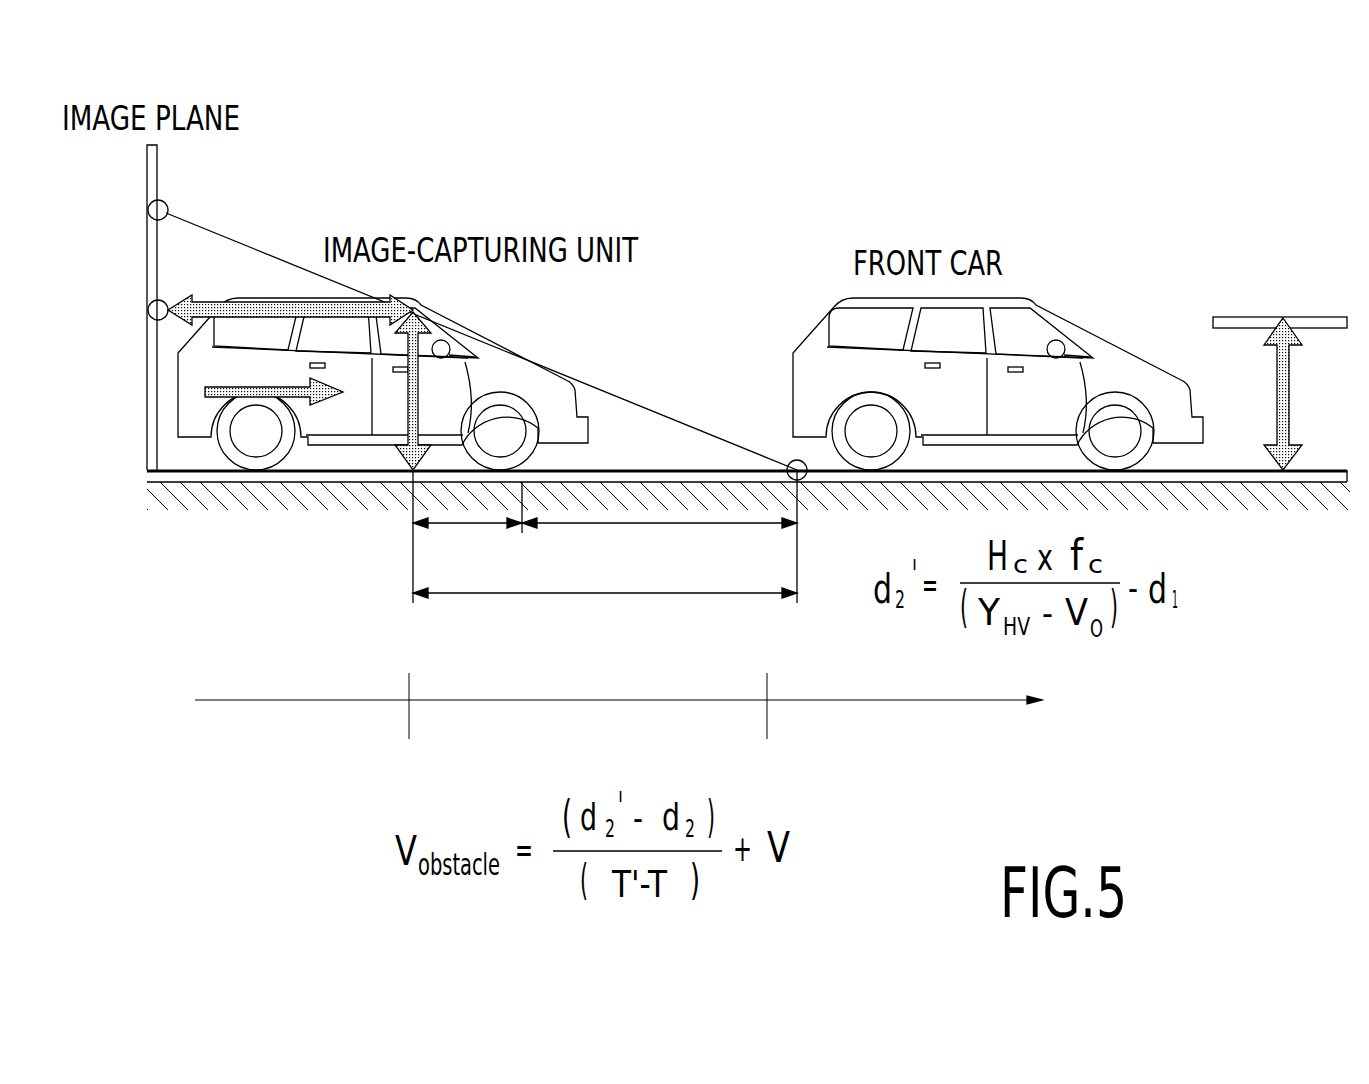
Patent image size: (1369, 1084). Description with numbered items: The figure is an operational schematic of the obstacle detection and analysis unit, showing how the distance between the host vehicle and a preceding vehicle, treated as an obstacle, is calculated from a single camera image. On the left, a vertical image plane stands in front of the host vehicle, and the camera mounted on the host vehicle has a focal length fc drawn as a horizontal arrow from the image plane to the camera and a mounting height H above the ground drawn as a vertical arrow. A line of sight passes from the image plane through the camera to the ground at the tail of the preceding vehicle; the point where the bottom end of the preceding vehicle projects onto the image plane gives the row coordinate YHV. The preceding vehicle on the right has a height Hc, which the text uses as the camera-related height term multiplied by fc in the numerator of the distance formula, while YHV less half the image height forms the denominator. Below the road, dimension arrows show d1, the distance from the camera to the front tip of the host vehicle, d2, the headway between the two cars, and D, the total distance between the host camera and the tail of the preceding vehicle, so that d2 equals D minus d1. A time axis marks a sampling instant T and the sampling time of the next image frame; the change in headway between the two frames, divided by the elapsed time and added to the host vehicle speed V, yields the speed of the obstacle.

The image row coordinate of preceding vehicle bottom end point YHV is at (121, 239).
The focal length of camera fc is at (290, 289).
The height of mounted camera H is at (421, 391).
The speed of the vehicle V is at (274, 376).
The height of mounted camera from the ground Hc is at (1280, 393).
The distance from camera to front tip of host vehicle d1 is at (467, 550).
The headway between two cars d2 is at (659, 550).
The distance between host camera and tail of preceding vehicle D is at (605, 617).
The sampling time T is at (660, 717).